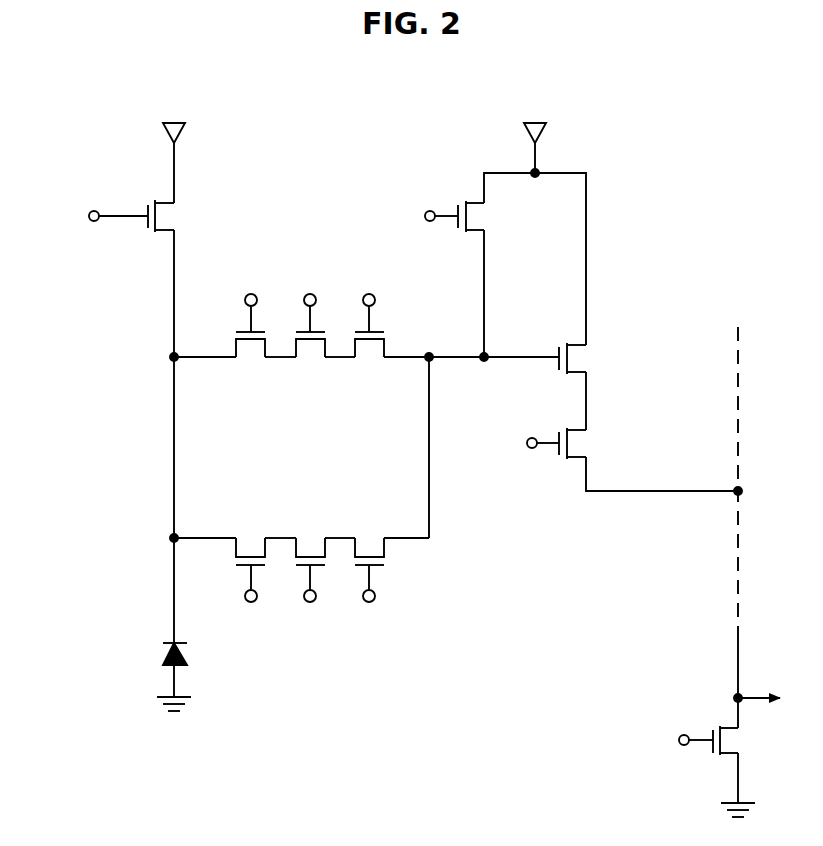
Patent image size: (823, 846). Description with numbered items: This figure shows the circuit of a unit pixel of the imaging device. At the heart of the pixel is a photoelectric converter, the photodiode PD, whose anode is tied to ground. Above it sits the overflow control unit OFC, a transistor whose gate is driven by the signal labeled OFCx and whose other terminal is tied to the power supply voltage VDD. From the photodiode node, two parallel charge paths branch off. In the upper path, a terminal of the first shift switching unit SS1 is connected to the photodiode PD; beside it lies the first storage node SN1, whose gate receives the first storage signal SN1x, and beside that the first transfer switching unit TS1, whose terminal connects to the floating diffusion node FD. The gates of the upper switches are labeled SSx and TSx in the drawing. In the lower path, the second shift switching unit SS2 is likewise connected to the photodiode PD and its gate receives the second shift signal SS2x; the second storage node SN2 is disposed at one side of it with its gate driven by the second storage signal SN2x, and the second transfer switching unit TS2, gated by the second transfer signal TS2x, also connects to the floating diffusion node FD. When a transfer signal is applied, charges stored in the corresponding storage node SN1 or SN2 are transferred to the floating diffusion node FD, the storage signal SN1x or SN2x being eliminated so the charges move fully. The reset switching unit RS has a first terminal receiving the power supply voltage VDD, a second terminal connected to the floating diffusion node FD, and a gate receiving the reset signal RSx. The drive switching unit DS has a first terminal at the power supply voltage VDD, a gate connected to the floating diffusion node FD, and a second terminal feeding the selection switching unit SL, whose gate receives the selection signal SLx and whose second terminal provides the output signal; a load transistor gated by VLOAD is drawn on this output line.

The overflow control unit OFC is at (221, 189).
The overflow control signal OFCx is at (81, 216).
The power supply voltage VDD is at (354, 133).
The photodiode PD is at (163, 650).
The first shift switching unit SS1 is at (247, 368).
The first storage node SN1 is at (310, 368).
The first transfer switching unit TS1 is at (376, 368).
The second shift switching unit SS2 is at (247, 529).
The second storage node SN2 is at (310, 529).
The second transfer switching unit TS2 is at (376, 529).
The storage switch control signal SSx is at (247, 279).
The first storage signal SN1x is at (312, 279).
The transfer switch control signal TSx is at (375, 279).
The second shift signal SS2x is at (240, 619).
The second storage signal SN2x is at (311, 619).
The second transfer signal TS2x is at (382, 619).
The floating diffusion node FD is at (484, 361).
The reset switching unit RS is at (519, 234).
The reset signal RSx is at (414, 216).
The drive switching unit DS is at (623, 344).
The selection switching unit SL is at (620, 430).
The selection signal SLx is at (518, 443).
The load transistor bias voltage VLOAD is at (662, 771).